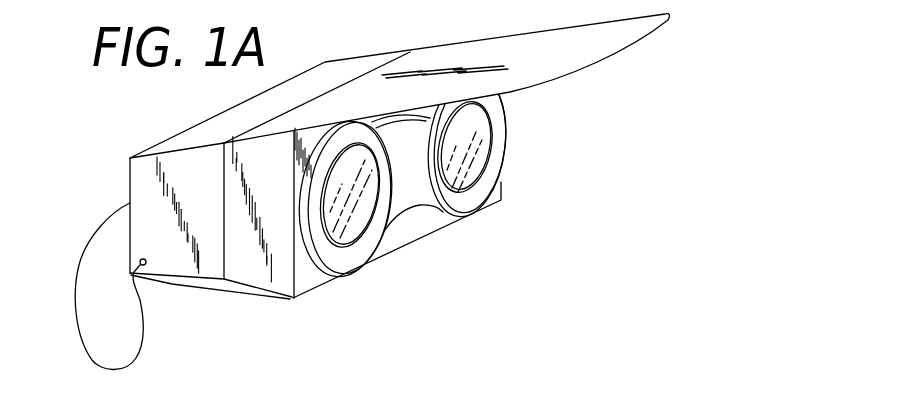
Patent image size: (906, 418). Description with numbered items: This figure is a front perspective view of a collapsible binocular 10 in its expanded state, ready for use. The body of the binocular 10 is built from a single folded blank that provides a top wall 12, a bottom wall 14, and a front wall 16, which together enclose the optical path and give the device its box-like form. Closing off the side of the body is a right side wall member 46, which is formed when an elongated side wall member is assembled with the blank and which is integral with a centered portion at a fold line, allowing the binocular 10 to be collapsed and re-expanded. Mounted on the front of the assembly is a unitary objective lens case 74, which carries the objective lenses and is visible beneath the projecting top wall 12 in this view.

The collapsible binocular 10 is at (126, 118).
The top wall 12 is at (357, 67).
The bottom wall 14 is at (232, 287).
The front wall 16 is at (403, 237).
The right side wall member 46 is at (140, 193).
The unitary objective lens case 74 is at (504, 122).